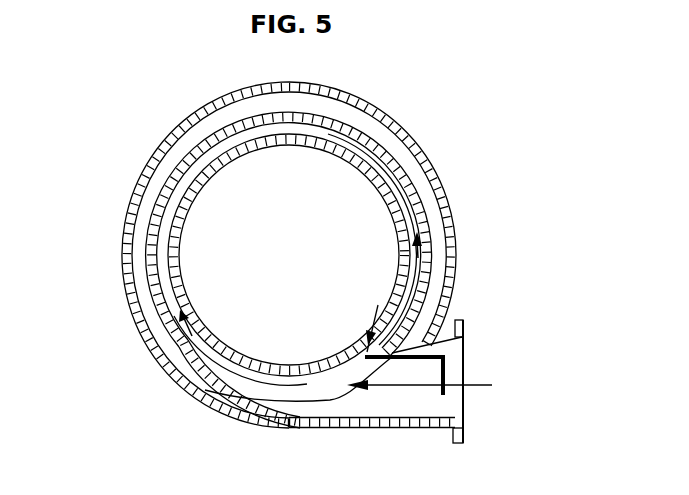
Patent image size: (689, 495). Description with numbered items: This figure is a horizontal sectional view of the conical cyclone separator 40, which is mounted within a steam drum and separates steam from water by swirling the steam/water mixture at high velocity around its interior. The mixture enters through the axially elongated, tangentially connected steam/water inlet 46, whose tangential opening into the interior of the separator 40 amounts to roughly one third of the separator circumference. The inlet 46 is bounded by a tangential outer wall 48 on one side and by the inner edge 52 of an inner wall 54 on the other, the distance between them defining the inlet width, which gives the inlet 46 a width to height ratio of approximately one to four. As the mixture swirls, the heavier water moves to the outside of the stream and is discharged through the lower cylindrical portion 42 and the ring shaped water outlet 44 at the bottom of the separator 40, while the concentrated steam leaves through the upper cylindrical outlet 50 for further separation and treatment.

The conical cyclone separator 40 is at (116, 179).
The lower cylindrical portion 42 is at (315, 255).
The ring shaped water outlet 44 is at (131, 311).
The steam/water inlet 46 is at (443, 381).
The tangential outer wall 48 is at (371, 430).
The upper cylindrical outlet 50 is at (311, 233).
The inner edge 52 is at (380, 292).
The inner wall 54 is at (405, 215).